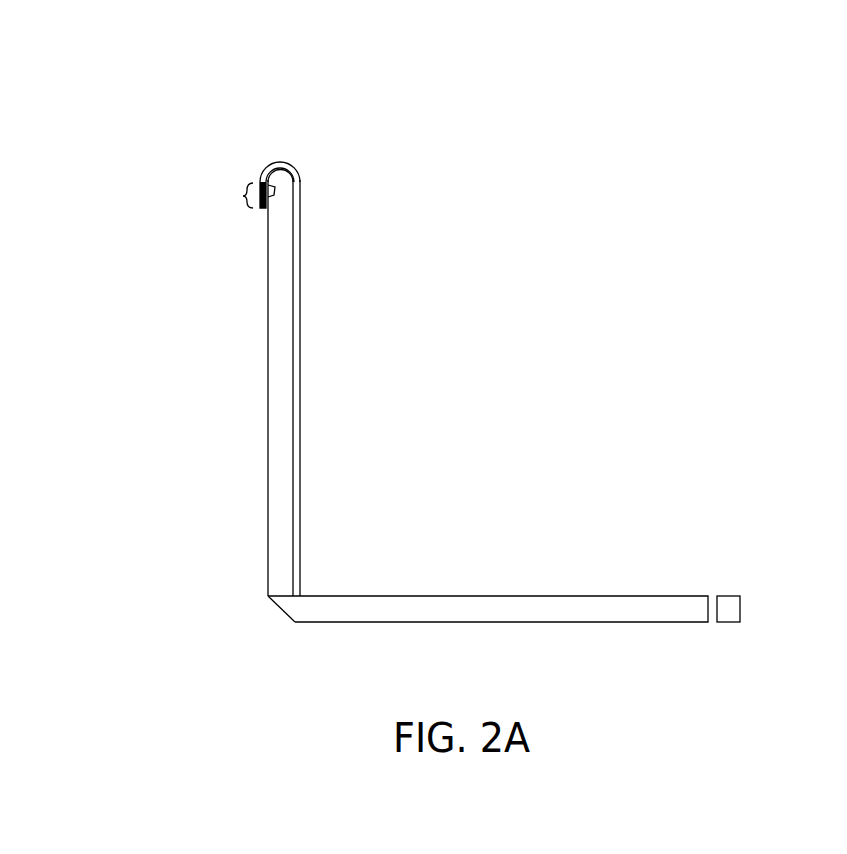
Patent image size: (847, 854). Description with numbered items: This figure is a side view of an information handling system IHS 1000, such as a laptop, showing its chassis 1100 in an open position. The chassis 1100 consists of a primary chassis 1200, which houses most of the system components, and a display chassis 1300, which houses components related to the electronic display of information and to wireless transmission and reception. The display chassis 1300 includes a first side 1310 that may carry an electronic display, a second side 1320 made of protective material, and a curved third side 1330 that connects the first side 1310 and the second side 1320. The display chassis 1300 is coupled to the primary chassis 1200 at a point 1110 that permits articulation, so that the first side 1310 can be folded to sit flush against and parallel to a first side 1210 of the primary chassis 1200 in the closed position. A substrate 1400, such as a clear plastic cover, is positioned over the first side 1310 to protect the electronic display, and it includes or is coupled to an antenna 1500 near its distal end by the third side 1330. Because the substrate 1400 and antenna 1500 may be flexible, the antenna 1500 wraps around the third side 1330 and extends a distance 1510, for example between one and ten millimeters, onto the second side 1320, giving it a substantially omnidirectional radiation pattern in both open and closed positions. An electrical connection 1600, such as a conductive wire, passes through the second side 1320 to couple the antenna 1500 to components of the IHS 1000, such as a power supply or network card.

The IHS 1000 is at (428, 126).
The chassis 1100 is at (192, 171).
The point 1110 is at (264, 599).
The primary chassis 1200 is at (740, 610).
The first side 1210 is at (513, 595).
The display chassis 1300 is at (717, 162).
The first side 1310 is at (300, 470).
The second side 1320 is at (267, 429).
The third side 1330 is at (283, 169).
The substrate 1400 is at (301, 268).
The antenna 1500 is at (302, 186).
The distance 1510 is at (243, 196).
The electrical connection 1600 is at (261, 172).